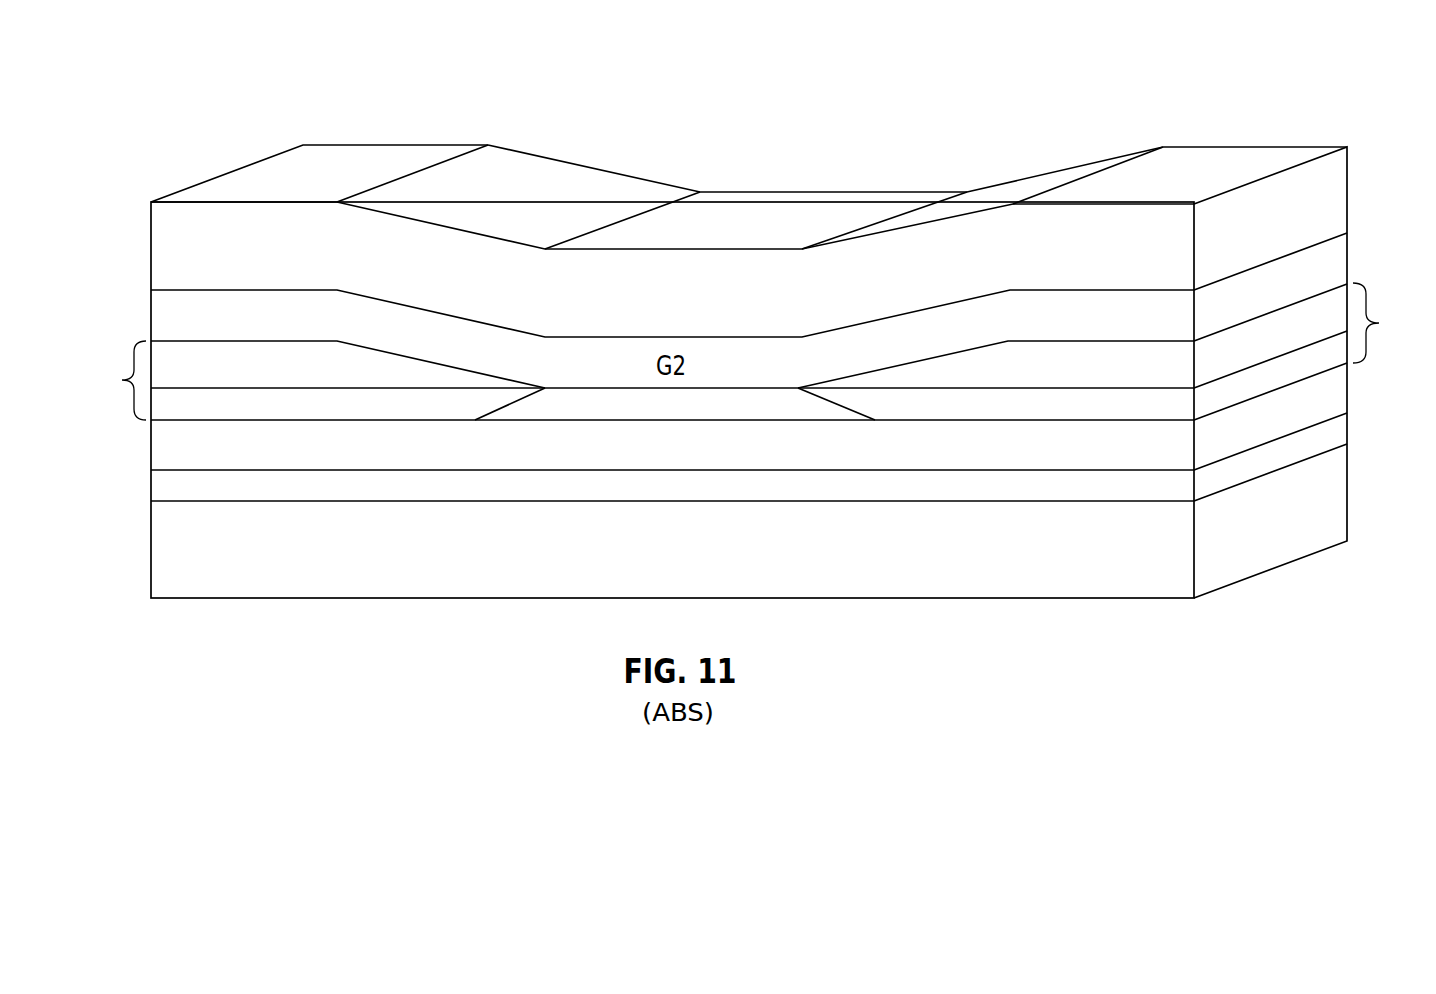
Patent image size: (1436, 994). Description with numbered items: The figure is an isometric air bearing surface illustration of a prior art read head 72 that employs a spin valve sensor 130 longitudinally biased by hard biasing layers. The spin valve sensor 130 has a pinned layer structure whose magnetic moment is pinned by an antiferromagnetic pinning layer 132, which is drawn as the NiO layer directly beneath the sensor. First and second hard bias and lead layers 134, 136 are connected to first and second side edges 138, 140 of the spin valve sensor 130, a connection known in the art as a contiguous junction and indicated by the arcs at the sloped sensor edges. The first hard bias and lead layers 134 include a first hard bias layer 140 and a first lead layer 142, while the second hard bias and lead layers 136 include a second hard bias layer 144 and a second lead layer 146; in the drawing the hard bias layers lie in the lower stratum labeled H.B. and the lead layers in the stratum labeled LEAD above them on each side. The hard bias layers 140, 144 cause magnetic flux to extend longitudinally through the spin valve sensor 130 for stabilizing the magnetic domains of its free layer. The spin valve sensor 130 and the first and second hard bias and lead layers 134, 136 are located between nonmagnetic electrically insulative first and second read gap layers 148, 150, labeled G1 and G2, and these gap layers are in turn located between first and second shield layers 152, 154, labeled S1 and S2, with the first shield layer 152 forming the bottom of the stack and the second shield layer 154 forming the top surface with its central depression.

The read head 72 is at (830, 160).
The spin valve sensor 130 is at (580, 378).
The antiferromagnetic (AFM) pinning layer 132 is at (872, 450).
The first hard bias and lead layers 134 is at (109, 380).
The second hard bias and lead layers 136 is at (1390, 323).
The first side edge 138 is at (493, 411).
The first hard bias layer 140 is at (193, 405).
The first lead layer 142 is at (193, 353).
The second hard bias layer 144 is at (1142, 408).
The second lead layer 146 is at (1141, 355).
The first read gap layer 148 is at (441, 492).
The second read gap layer 150 is at (402, 320).
The first shield layer 152 is at (327, 575).
The second shield layer 154 is at (601, 181).